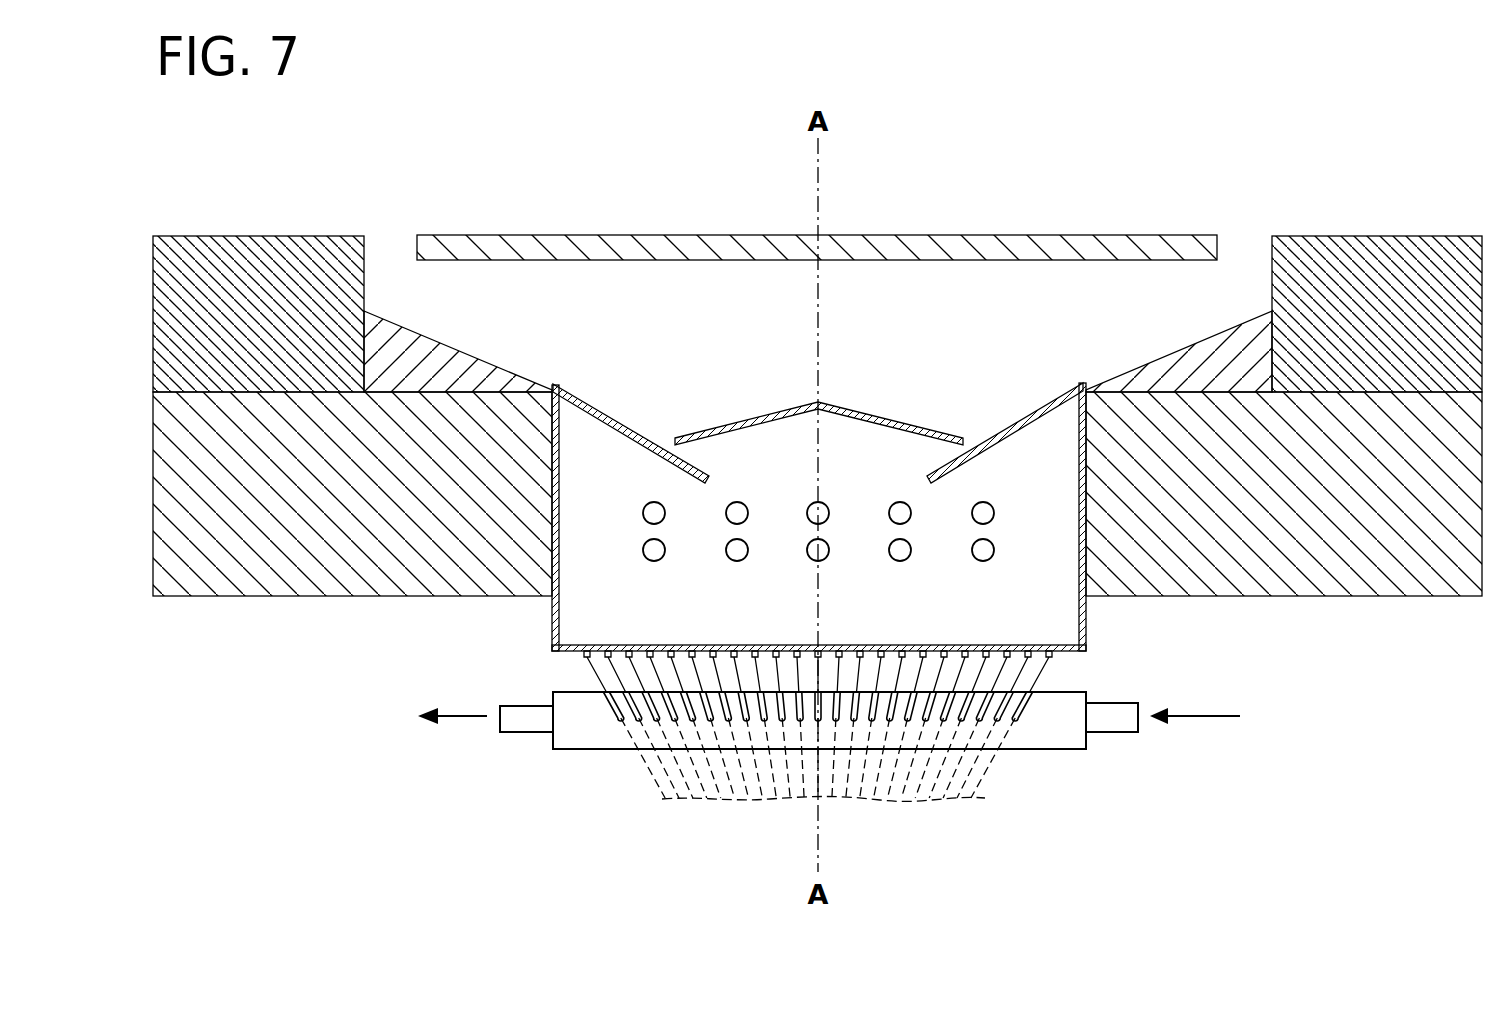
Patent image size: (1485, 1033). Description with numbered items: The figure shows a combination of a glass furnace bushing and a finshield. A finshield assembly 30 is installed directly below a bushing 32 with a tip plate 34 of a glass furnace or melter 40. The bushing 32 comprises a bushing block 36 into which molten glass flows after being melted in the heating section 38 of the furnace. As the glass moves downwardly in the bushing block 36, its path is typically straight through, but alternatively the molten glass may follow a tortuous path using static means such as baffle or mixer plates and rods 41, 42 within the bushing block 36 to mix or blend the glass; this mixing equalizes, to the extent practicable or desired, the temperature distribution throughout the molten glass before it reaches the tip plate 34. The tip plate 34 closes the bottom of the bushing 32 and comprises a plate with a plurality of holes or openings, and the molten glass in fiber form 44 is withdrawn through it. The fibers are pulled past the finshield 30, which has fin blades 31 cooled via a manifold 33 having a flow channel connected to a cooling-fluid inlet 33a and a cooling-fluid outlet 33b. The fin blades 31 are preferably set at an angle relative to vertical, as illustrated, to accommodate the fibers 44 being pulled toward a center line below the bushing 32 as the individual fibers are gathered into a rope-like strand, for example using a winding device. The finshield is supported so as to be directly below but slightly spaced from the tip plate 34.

The finshield assembly 30 is at (1106, 681).
The fin blades 31 is at (1030, 715).
The bushing 32 is at (1087, 612).
The manifold 33 is at (1087, 741).
The cooling-fluid inlet 33a is at (1118, 733).
The cooling-fluid outlet 33b is at (528, 733).
The tip plate 34 is at (1055, 661).
The bushing block 36 is at (632, 410).
The heating section 38 is at (550, 228).
The glass furnace or melter 40 is at (1046, 198).
The baffle or mixer plates and rods 41 is at (1010, 420).
The baffle or mixer plates and rods 42 is at (994, 548).
The molten glass in fiber form 44 is at (980, 772).